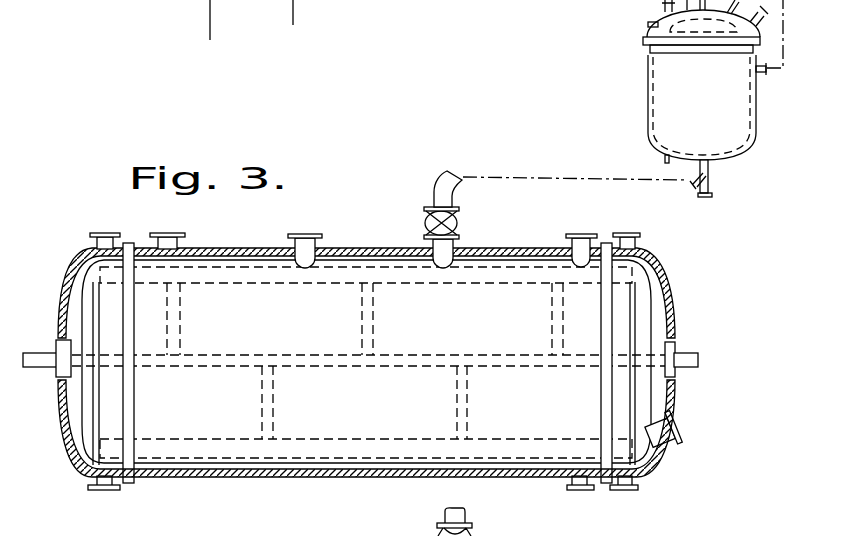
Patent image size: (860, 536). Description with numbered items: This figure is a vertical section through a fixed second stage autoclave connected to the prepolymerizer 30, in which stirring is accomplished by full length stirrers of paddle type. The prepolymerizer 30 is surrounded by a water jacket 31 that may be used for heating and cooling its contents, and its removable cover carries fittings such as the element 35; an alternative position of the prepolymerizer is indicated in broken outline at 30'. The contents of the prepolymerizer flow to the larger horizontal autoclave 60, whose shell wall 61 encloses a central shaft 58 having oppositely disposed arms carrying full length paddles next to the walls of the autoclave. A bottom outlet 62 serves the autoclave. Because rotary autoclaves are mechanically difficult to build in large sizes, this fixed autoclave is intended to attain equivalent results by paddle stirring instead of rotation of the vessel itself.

The prepolymerizer 30 is at (729, 117).
The alternative vessel position 30' is at (798, 51).
The water jacket 31 is at (658, 100).
The vessel head 35 is at (657, 23).
The central shaft 58 is at (698, 369).
The horizontal tank 60 is at (642, 295).
The tank shell 61 is at (313, 452).
The bottom outlet nozzle 62 is at (496, 522).